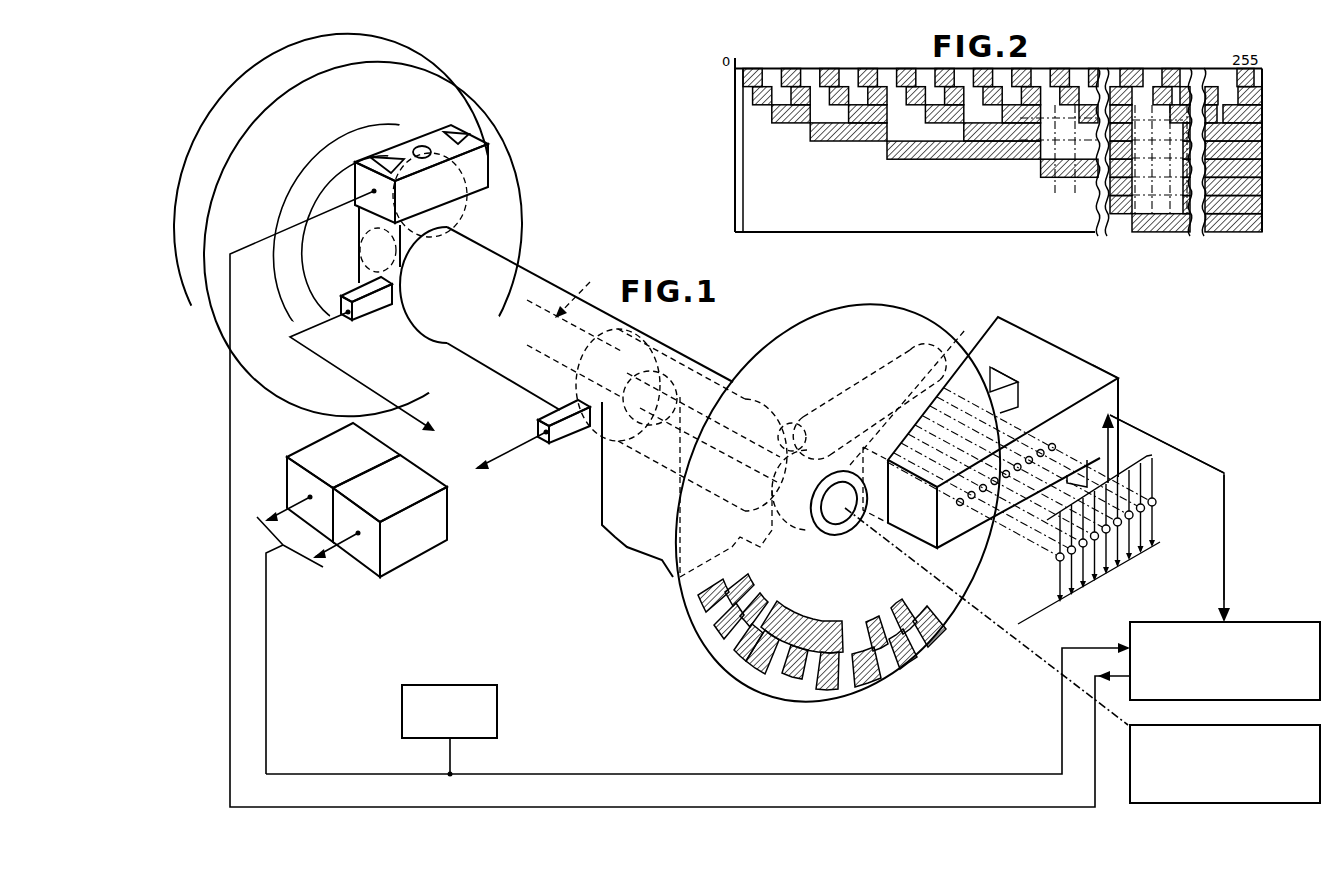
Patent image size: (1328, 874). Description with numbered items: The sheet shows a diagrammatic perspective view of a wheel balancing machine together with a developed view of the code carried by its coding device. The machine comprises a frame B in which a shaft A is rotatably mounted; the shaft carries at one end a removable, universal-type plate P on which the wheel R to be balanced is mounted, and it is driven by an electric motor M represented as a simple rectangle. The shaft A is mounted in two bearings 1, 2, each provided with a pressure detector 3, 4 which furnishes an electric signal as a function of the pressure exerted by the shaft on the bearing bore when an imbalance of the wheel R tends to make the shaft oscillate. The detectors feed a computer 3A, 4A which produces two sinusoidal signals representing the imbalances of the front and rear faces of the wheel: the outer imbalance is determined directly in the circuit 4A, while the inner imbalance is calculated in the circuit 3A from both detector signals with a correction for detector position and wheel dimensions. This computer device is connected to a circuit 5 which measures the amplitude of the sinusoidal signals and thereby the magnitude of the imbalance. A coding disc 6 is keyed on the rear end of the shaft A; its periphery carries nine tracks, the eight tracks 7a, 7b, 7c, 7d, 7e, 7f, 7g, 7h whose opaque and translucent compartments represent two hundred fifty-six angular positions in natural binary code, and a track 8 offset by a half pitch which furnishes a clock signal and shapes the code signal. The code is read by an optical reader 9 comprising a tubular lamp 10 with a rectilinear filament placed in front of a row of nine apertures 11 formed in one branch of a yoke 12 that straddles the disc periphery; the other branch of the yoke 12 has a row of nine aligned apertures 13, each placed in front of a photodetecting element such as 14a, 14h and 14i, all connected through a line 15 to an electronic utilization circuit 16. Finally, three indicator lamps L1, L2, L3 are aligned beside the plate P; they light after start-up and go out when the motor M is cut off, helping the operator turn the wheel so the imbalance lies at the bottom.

In FIG. 1, the wheel R is at (498, 106).
In FIG. 1, the plate P is at (333, 193).
In FIG. 1, the indicator lamp L1 is at (423, 145).
In FIG. 1, the indicator lamp L2 is at (450, 138).
In FIG. 1, the indicator lamp L3 is at (387, 158).
In FIG. 1, the bearing 1 is at (517, 260).
In FIG. 1, the bearing 2 is at (693, 348).
In FIG. 1, the pressure detector 3 is at (352, 292).
In FIG. 1, the computer circuit 3A is at (317, 457).
In FIG. 1, the pressure detector 4 is at (573, 430).
In FIG. 1, the computer circuit 4A is at (403, 537).
In FIG. 1, the imbalance value determining circuit 5 is at (447, 685).
In FIG. 1, the coding disc 6 is at (775, 364).
In FIG. 2, the coding disc 6 is at (843, 66).
In FIG. 2, the coded track 7a is at (1265, 86).
In FIG. 2, the coded track 7b is at (1265, 103).
In FIG. 2, the coded track 7c is at (1265, 121).
In FIG. 2, the coded track 7d is at (1265, 140).
In FIG. 2, the coded track 7e is at (1265, 160).
In FIG. 2, the coded track 7f is at (1265, 178).
In FIG. 2, the coded track 7g is at (1265, 197).
In FIG. 2, the coded track 7h is at (1265, 215).
In FIG. 2, the clock track 8 is at (1265, 72).
In FIG. 1, the optical reader 9 is at (1064, 343).
In FIG. 1, the tubular lamp 10 is at (863, 372).
In FIG. 1, the apertures 11 is at (1012, 410).
In FIG. 1, the yoke 12 is at (1093, 367).
In FIG. 1, the apertures 13 is at (1053, 447).
In FIG. 1, the photodetecting element 14a is at (1153, 517).
In FIG. 1, the photodetecting element 14h is at (1054, 557).
In FIG. 1, the photodetecting element 14i is at (1156, 498).
In FIG. 1, the line 15 is at (1193, 457).
In FIG. 1, the electronic utilization circuit 16 is at (1225, 661).
In FIG. 1, the electric motor M is at (1225, 764).
In FIG. 1, the shaft A is at (577, 288).
In FIG. 2, the shaft A is at (734, 147).
In FIG. 1, the frame B is at (600, 505).